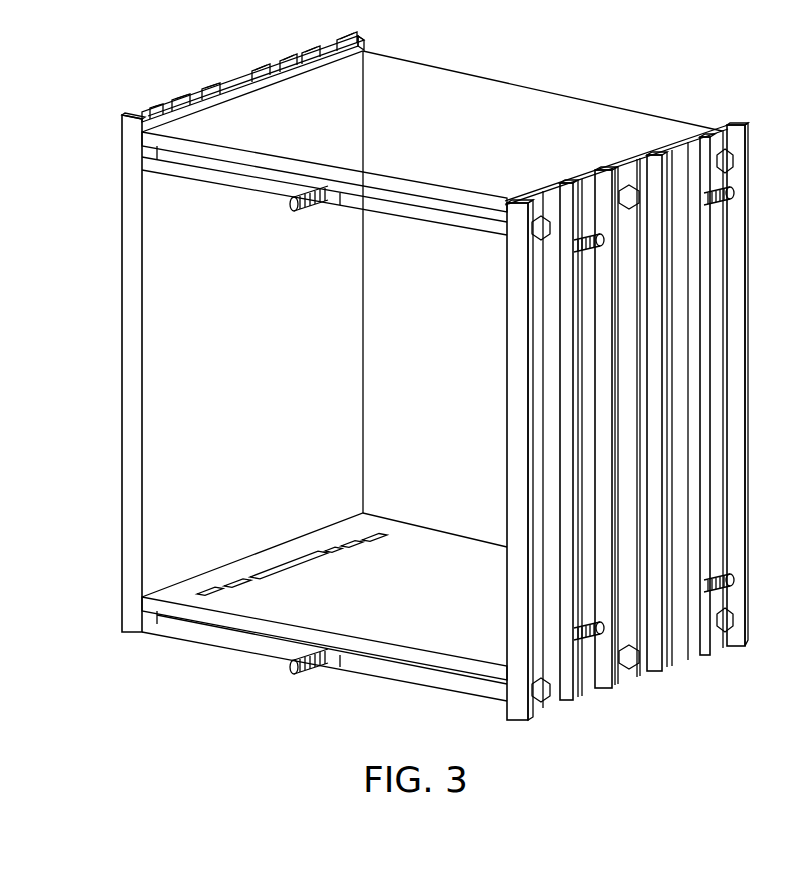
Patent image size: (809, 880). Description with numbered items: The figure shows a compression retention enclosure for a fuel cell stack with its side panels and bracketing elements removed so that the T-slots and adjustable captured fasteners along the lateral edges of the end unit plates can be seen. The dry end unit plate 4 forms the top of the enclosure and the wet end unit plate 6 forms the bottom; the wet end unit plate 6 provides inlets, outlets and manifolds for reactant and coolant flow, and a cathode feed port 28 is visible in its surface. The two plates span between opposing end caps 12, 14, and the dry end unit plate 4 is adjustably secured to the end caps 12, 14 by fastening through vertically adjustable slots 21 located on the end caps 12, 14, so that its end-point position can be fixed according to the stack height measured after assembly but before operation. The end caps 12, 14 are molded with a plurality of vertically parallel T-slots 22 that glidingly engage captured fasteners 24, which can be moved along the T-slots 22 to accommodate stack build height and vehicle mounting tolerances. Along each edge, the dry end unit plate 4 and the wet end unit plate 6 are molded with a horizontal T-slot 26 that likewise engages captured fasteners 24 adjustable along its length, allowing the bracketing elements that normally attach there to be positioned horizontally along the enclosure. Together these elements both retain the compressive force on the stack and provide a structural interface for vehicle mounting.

The dry end unit plate 4 is at (488, 93).
The wet end unit plate 6 is at (442, 550).
The end cap 12 is at (121, 378).
The end cap 14 is at (750, 400).
The vertically adjustable slot 21 is at (620, 182).
The vertically parallel T-slot 22 is at (560, 338).
The captured fastener 24 is at (733, 585).
The horizontal T-slot 26 is at (238, 173).
The cathode feed port 28 is at (287, 558).